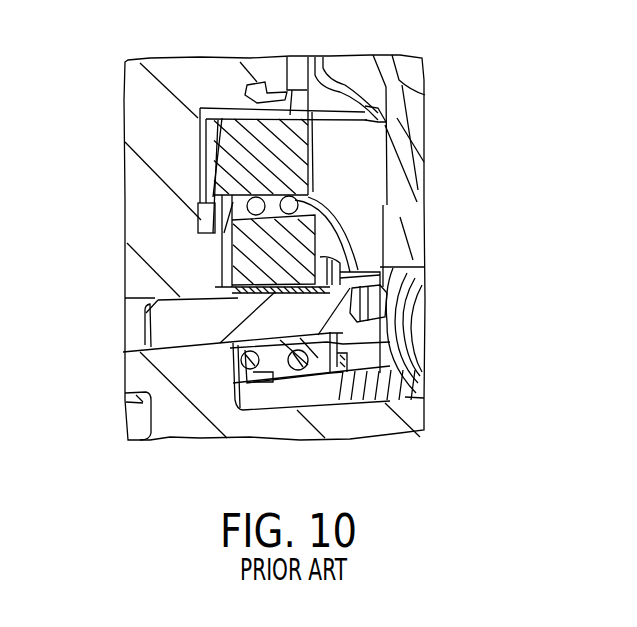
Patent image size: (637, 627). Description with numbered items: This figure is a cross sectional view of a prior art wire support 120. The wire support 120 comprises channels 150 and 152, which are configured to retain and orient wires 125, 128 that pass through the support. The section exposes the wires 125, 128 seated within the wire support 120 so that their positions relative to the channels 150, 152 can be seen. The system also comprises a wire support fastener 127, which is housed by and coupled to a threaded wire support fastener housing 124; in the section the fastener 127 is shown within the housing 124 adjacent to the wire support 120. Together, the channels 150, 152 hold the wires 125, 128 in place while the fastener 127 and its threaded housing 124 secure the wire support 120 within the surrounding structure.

The wire support 120 is at (335, 125).
The threaded wire support fastener housing 124 is at (135, 335).
The wire 125 is at (296, 202).
The wire support fastener 127 is at (424, 308).
The wire 128 is at (254, 197).
The channel 150 is at (345, 212).
The channel 152 is at (205, 203).